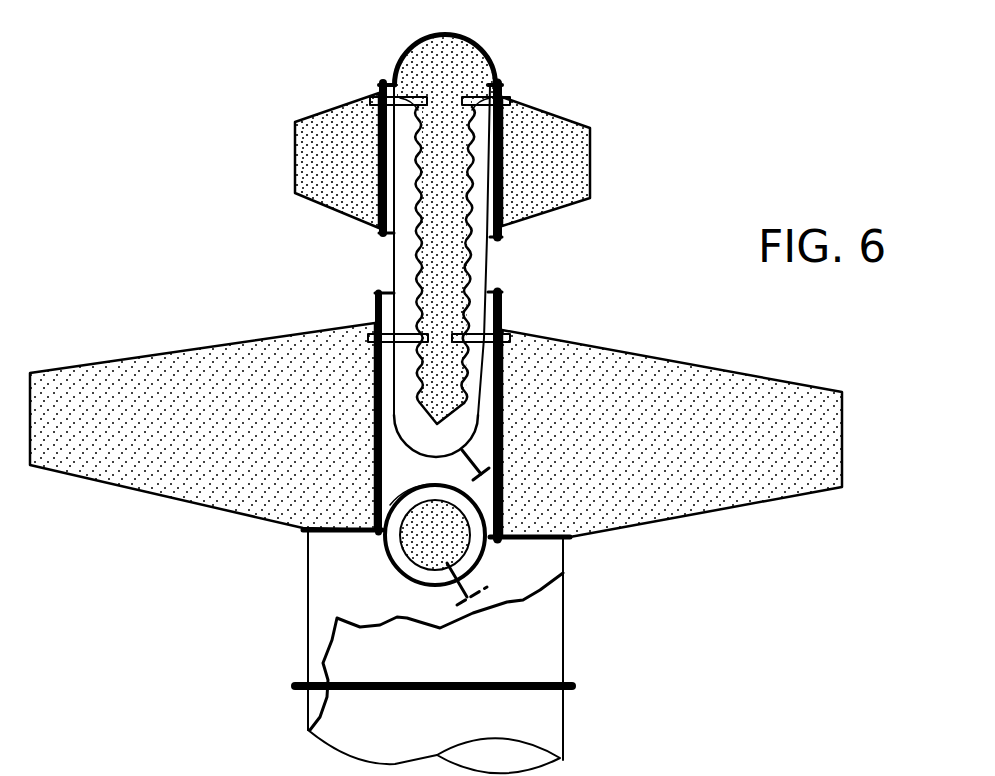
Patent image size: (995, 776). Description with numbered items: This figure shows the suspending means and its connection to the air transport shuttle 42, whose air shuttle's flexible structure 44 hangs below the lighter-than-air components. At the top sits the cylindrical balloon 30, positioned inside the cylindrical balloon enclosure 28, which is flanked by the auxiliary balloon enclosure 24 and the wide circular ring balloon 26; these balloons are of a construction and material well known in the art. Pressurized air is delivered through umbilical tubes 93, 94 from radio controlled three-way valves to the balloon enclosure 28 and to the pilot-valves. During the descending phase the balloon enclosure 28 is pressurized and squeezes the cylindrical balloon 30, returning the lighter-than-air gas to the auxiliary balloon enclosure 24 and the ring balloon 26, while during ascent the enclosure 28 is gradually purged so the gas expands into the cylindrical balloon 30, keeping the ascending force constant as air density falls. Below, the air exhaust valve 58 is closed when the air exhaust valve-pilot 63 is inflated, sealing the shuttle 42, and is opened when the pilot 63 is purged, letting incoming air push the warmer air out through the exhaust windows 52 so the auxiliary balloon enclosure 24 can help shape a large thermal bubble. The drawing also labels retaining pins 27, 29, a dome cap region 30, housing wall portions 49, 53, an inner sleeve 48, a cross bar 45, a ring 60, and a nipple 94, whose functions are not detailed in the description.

The auxiliary balloon enclosure 24 is at (491, 160).
The circular ring balloon 26 is at (436, 418).
The upper retaining pin 27 is at (453, 118).
The cylindrical balloon enclosure 28 is at (551, 265).
The lower retaining pin 29 is at (490, 309).
The cylindrical balloon 30 is at (539, 71).
The air transport shuttle 42 is at (493, 648).
The air shuttle's flexible structure 44 is at (557, 720).
The cross bar 45 is at (380, 727).
The inner sleeve 48 is at (539, 271).
The upper housing wall 49 is at (360, 142).
The exhaust windows 52 is at (306, 242).
The lower housing wall 53 is at (394, 435).
The air exhaust valve 58 is at (564, 576).
The ring 60 is at (352, 598).
The air exhaust valve-pilot 63 is at (344, 579).
The umbilical tube 93 is at (493, 651).
The umbilical tube 94 is at (612, 524).